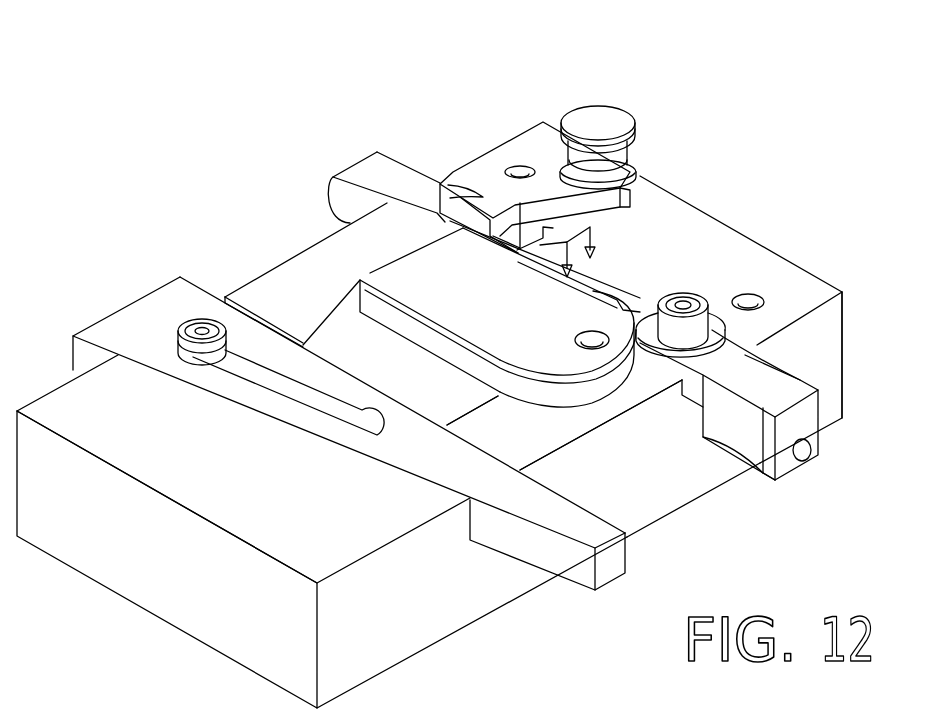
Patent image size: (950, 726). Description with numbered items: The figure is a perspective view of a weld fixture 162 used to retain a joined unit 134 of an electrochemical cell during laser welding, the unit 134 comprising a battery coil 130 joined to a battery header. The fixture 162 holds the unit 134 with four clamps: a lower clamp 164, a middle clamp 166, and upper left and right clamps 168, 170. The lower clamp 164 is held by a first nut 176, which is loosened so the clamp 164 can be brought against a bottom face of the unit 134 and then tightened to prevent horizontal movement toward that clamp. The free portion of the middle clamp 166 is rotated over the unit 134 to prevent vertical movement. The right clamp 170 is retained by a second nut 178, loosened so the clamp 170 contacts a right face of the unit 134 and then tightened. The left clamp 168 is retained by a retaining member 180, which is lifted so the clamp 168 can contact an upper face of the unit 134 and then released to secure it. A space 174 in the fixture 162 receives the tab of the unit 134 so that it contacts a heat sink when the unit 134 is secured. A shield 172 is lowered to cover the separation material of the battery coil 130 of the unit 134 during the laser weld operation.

The battery coil 130 is at (337, 330).
The joined unit 134 is at (484, 416).
The fixture 162 is at (742, 170).
The lower clamp 164 is at (137, 300).
The middle clamp 166 is at (573, 367).
The upper left clamp 168 is at (548, 190).
The upper right clamp 170 is at (641, 298).
The shield 172 is at (447, 185).
The space 174 is at (617, 270).
The first nut 176 is at (193, 355).
The second nut 178 is at (800, 378).
The retaining member 180 is at (593, 106).